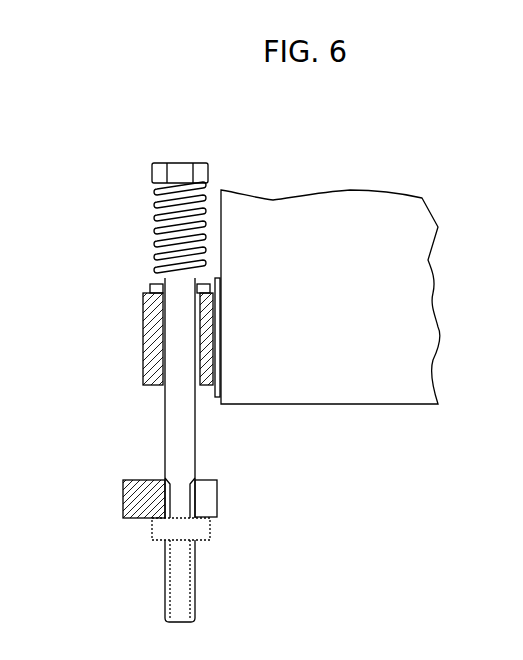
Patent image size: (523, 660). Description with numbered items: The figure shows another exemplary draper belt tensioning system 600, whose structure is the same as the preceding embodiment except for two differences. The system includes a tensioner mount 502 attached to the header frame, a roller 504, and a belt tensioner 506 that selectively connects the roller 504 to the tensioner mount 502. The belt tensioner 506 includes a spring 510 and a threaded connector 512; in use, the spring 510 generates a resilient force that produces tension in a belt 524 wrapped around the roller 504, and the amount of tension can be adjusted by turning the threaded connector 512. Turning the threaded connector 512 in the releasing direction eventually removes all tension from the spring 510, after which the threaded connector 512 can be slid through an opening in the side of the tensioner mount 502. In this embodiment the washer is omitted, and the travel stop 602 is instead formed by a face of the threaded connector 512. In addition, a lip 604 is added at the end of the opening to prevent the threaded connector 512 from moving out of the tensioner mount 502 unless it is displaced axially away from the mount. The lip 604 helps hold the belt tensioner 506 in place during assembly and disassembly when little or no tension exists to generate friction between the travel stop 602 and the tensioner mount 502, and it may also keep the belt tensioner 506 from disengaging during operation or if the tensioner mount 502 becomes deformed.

The tensioner mount 502 is at (123, 495).
The roller 504 is at (222, 292).
The belt tensioner 506 is at (158, 421).
The spring 510 is at (153, 212).
The threaded connector 512 is at (203, 542).
The belt 524 is at (337, 215).
The belt tensioning system 600 is at (331, 484).
The travel stop 602 is at (205, 515).
The lip 604 is at (215, 521).